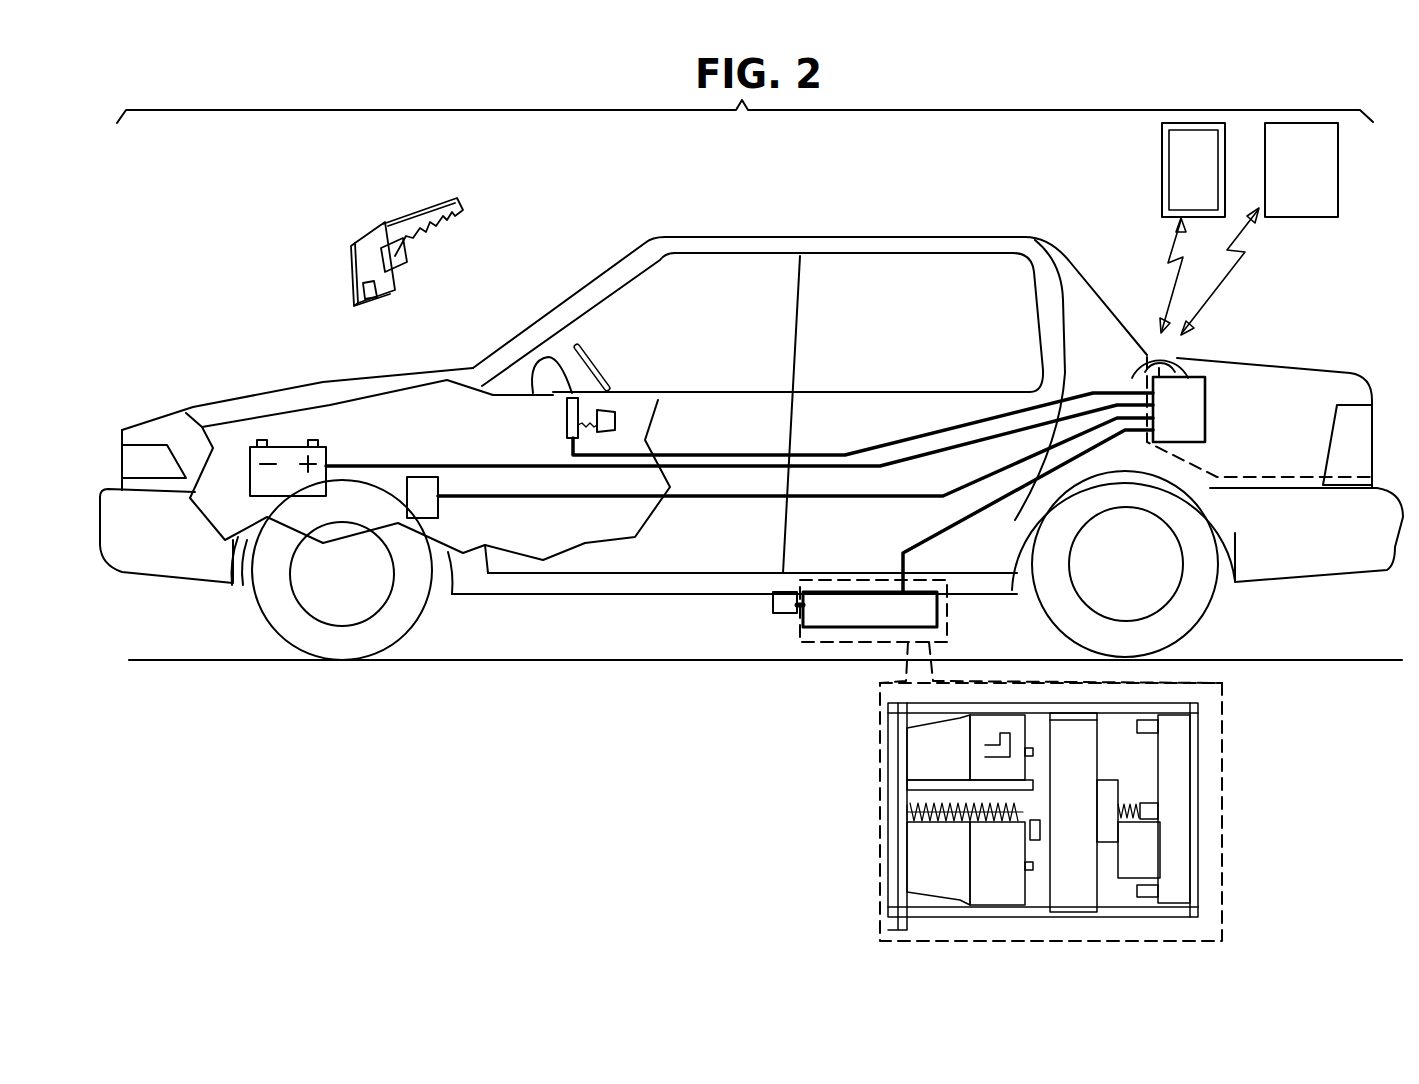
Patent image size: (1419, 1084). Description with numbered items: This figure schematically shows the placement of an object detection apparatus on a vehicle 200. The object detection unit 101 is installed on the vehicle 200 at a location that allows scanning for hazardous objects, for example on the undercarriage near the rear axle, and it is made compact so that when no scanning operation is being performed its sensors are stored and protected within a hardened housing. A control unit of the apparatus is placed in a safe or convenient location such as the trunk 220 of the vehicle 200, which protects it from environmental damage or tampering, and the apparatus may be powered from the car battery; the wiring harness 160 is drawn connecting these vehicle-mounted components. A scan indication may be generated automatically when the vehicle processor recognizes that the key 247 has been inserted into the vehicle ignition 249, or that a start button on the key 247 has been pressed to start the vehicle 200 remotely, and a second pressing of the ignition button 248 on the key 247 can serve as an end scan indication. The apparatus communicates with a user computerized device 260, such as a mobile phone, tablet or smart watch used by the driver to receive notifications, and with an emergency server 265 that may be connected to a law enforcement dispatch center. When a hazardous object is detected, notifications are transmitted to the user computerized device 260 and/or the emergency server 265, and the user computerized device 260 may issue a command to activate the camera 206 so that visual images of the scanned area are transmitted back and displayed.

The object detection unit 101 is at (820, 630).
The wiring harness 160 is at (933, 538).
The vehicle 200 is at (886, 237).
The camera 206 is at (775, 613).
The trunk 220 is at (1243, 403).
The key 247 is at (385, 222).
The ignition button 248 is at (372, 298).
The vehicle ignition 249 is at (615, 421).
The user computerized device 260 is at (1162, 158).
The emergency server 265 is at (1338, 160).